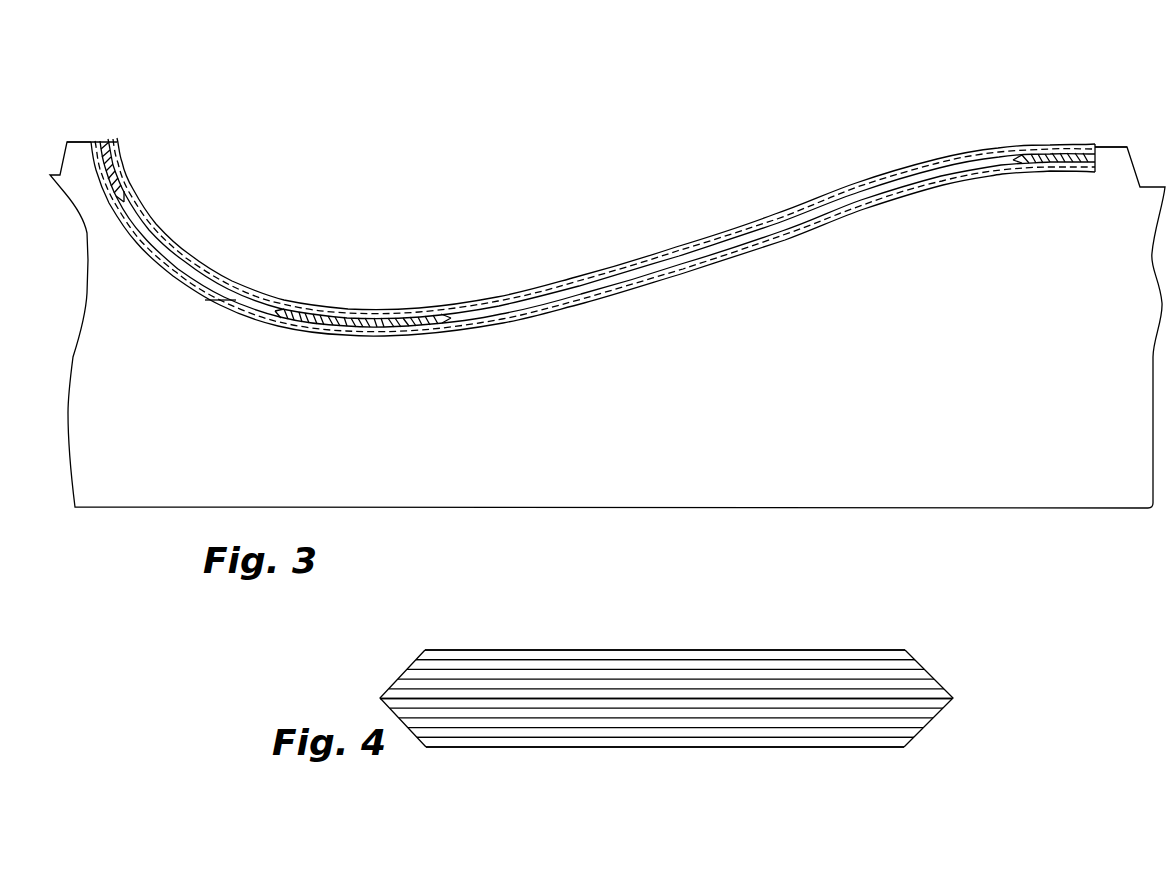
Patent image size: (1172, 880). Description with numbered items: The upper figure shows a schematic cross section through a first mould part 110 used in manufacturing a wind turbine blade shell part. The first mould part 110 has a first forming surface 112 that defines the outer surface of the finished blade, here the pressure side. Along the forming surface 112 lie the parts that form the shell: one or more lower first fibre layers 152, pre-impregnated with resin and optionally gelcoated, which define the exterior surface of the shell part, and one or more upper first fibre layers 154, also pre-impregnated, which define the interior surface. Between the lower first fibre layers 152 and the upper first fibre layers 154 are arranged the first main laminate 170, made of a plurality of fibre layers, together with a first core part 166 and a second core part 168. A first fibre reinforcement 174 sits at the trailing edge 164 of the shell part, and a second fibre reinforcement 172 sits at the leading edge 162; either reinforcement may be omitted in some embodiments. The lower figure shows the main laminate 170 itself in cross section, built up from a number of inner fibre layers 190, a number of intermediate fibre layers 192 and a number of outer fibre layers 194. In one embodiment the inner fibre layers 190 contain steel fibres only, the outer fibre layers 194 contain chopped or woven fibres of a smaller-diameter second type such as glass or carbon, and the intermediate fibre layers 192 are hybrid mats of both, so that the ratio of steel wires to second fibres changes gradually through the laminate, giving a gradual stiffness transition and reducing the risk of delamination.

In FIG. 3, the first mould part 110 is at (493, 425).
In FIG. 3, the first forming surface 112 is at (236, 302).
In FIG. 3, the lower first fibre layers 152 is at (948, 182).
In FIG. 3, the upper first fibre layers 154 is at (730, 227).
In FIG. 3, the leading edge 162 is at (75, 142).
In FIG. 3, the trailing edge 164 is at (1108, 147).
In FIG. 3, the first core part 166 is at (203, 277).
In FIG. 3, the second core part 168 is at (567, 290).
In FIG. 3, the first main laminate 170 is at (392, 318).
In FIG. 4, the first main laminate 170 is at (842, 635).
In FIG. 3, the second fibre reinforcement 172 is at (101, 142).
In FIG. 3, the first fibre reinforcement 174 is at (1045, 140).
In FIG. 4, the inner fibre layers 190 is at (950, 698).
In FIG. 4, the intermediate fibre layers 192 is at (927, 662).
In FIG. 4, the outer fibre layers 194 is at (907, 652).